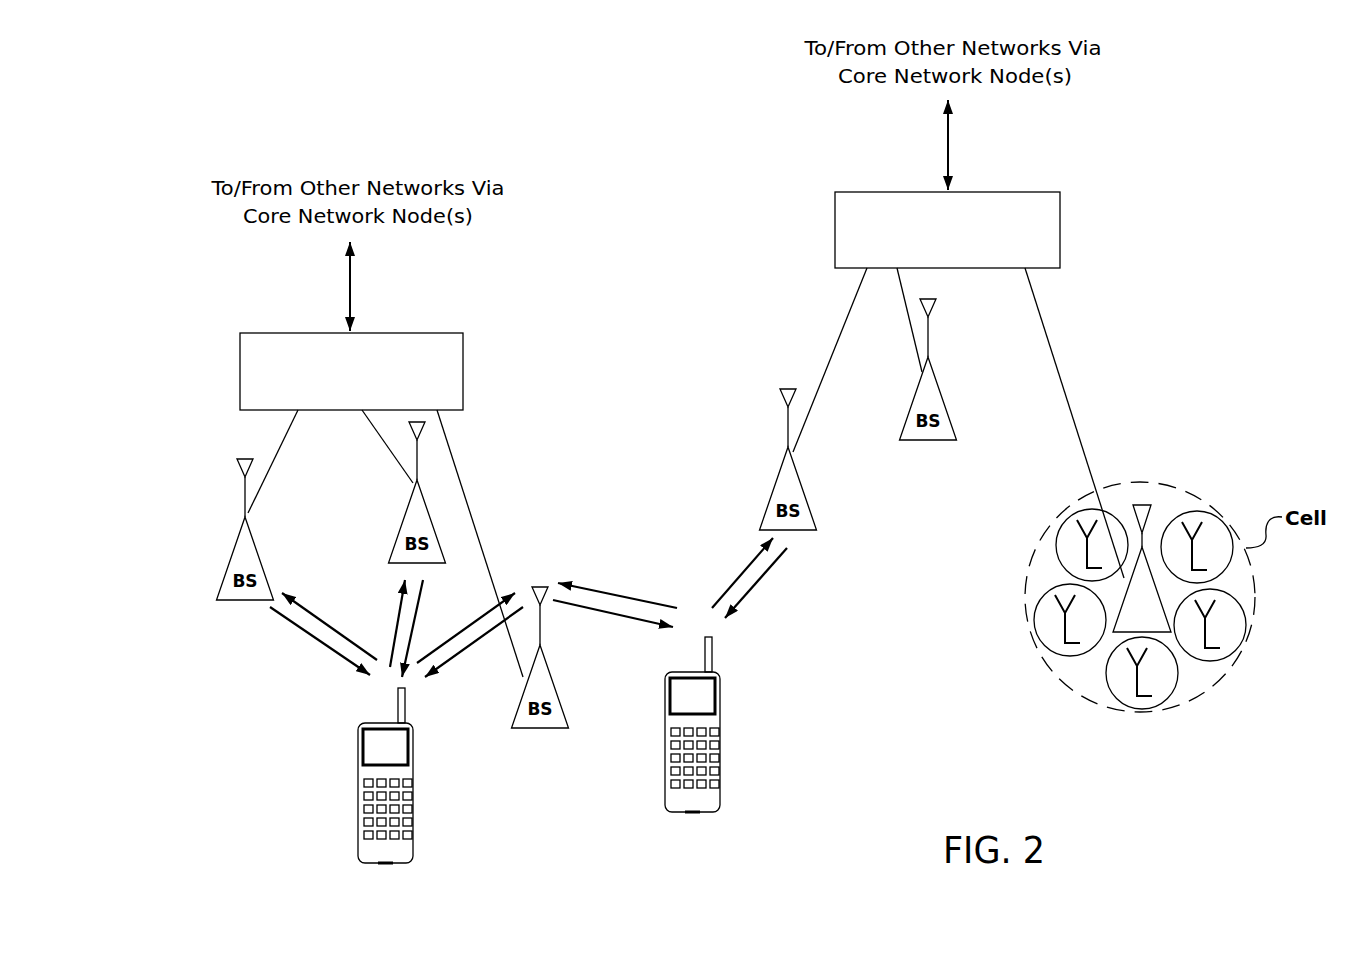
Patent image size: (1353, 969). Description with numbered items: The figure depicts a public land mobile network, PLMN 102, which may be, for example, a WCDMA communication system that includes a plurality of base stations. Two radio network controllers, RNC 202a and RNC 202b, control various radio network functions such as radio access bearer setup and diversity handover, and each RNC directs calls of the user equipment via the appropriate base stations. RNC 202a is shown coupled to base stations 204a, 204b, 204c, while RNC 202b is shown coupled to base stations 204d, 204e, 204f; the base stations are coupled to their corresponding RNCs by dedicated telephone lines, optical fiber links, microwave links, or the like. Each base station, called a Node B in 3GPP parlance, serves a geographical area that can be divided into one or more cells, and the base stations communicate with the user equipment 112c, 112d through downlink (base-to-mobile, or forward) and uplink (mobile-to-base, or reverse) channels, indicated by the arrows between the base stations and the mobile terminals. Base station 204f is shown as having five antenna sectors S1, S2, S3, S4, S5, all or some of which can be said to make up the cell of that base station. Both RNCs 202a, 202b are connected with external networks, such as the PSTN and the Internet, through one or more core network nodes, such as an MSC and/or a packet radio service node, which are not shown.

The PLMN 102 is at (598, 161).
The radio network controller 202a is at (463, 380).
The radio network controller 202b is at (1060, 237).
The base station 204a is at (237, 540).
The base station 204b is at (399, 532).
The base station 204c is at (550, 667).
The base station 204d is at (801, 485).
The base station 204e is at (935, 378).
The base station 204f is at (1150, 507).
The user equipment 112c is at (413, 772).
The user equipment 112d is at (722, 722).
The antenna sector S1 is at (1220, 518).
The antenna sector S2 is at (1236, 652).
The antenna sector S3 is at (1176, 691).
The antenna sector S4 is at (1034, 620).
The antenna sector S5 is at (1056, 540).